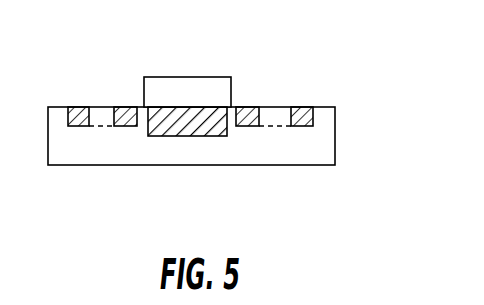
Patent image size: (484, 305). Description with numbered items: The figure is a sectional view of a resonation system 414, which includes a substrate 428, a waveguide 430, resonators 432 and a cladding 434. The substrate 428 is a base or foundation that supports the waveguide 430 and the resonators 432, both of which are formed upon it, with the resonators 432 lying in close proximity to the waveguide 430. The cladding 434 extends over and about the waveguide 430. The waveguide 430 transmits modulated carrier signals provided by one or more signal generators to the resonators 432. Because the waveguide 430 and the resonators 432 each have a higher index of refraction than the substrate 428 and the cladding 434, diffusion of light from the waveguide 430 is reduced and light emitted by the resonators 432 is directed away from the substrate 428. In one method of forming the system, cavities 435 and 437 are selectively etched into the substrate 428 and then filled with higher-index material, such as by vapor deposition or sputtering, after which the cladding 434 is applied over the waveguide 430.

The resonation system 414 is at (313, 72).
The substrate 428 is at (337, 147).
The waveguide 430 is at (185, 118).
The resonators 432 is at (66, 121).
The cladding 434 is at (207, 88).
The cavity 435 is at (194, 138).
The cavities 437 is at (77, 127).